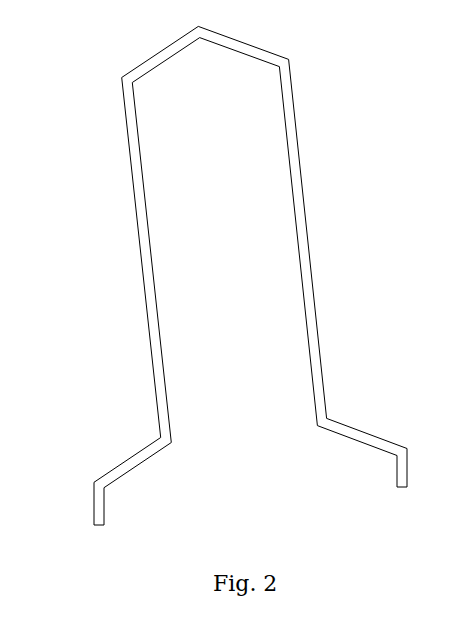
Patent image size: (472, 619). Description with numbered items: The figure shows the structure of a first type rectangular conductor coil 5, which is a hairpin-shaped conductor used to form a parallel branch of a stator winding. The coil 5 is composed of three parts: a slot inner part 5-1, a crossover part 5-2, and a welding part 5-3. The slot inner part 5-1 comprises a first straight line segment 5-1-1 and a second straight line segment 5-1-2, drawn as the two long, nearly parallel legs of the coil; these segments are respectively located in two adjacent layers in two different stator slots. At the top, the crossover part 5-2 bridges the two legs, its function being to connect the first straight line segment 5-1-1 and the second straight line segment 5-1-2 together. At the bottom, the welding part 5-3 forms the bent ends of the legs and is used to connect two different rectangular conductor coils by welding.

The first type rectangular conductor coil 5 is at (230, 275).
The slot inner part 5-1 is at (230, 250).
The first straight line segment 5-1-1 is at (160, 343).
The second straight line segment 5-1-2 is at (315, 335).
The crossover part 5-2 is at (220, 42).
The welding part 5-3 is at (367, 440).